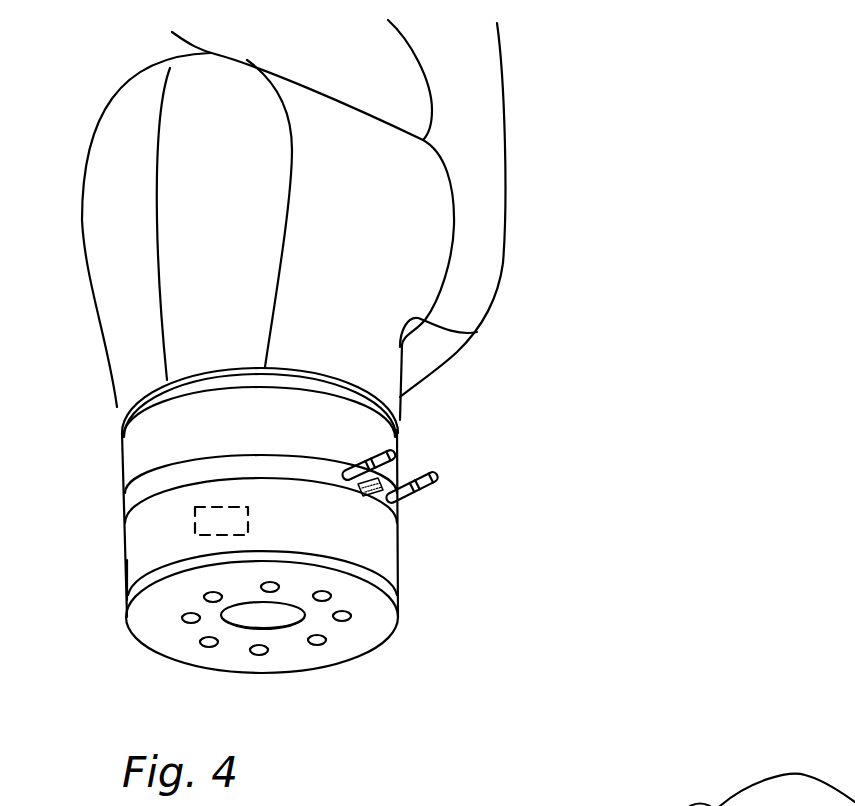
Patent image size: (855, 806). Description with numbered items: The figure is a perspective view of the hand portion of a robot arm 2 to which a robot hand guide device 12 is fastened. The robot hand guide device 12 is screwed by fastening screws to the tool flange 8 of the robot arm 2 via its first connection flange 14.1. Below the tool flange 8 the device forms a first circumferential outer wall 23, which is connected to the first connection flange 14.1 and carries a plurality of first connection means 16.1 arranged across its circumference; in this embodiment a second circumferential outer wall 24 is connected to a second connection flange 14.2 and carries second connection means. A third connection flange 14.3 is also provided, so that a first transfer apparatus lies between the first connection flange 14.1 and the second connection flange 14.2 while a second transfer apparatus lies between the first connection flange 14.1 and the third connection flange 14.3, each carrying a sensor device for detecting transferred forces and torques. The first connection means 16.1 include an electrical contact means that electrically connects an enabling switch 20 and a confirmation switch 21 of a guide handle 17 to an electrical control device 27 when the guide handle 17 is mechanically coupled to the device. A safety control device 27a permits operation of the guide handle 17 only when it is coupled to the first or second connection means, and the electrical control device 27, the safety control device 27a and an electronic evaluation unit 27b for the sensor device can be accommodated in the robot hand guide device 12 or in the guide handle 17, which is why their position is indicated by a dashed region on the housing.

The robot arm 2 is at (492, 205).
The tool flange 8 is at (120, 412).
The robot hand guide device 12 is at (448, 581).
The first connection flange 14.1 is at (367, 627).
The second connection flange 14.2 is at (400, 503).
The third connection flange 14.3 is at (400, 422).
The first connection means 16.1 is at (434, 455).
The first circumferential outer wall 23 is at (150, 450).
The second circumferential outer wall 24 is at (147, 545).
The electrical control device 27 is at (136, 612).
The safety control device 27a is at (136, 612).
The electronic evaluation unit 27b is at (218, 520).
The guide handle 17 is at (772, 739).
The enabling switch 20 is at (587, 805).
The confirmation switch 21 is at (457, 794).